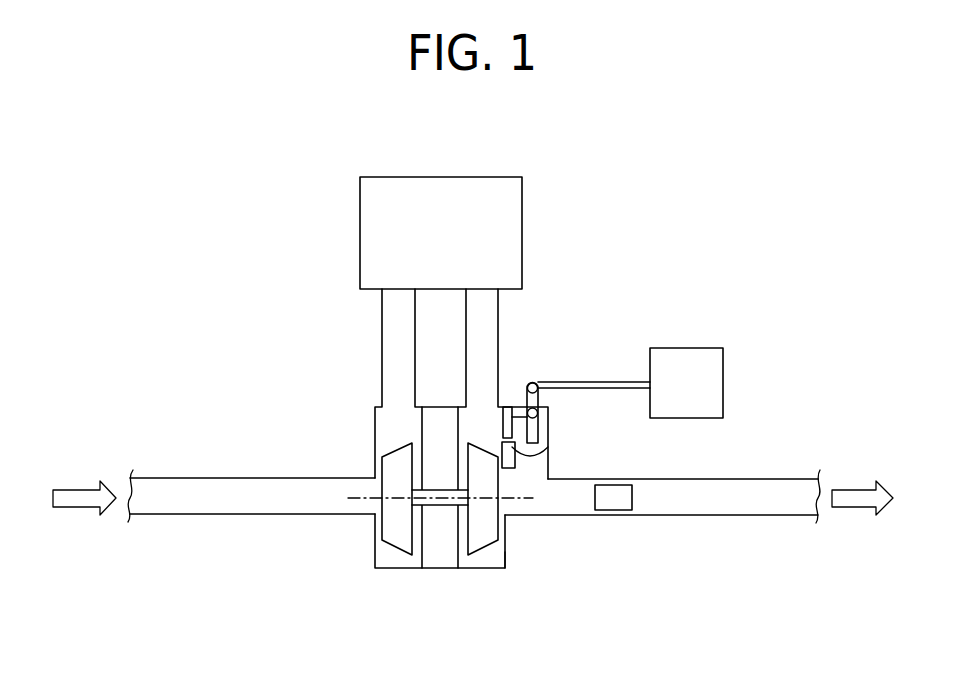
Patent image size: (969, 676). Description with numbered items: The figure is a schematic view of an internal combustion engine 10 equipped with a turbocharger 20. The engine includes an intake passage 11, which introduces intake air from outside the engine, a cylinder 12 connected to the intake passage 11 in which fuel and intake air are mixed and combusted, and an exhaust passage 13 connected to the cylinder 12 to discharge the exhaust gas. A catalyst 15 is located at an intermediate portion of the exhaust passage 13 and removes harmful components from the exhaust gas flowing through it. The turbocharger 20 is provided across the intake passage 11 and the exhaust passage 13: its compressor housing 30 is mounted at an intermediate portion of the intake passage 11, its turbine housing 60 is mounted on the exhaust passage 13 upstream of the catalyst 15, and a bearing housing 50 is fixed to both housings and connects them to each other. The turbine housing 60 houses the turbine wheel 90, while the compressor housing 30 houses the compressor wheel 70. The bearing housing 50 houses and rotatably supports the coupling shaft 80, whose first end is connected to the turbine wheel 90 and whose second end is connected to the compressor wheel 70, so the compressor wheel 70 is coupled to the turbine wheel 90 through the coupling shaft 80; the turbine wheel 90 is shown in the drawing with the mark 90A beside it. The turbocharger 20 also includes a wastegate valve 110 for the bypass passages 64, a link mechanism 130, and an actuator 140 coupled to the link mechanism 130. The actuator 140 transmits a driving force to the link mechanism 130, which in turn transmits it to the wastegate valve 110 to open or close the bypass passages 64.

The internal combustion engine 10 is at (245, 197).
The intake passage 11 is at (382, 318).
The cylinder 12 is at (467, 177).
The exhaust passage 13 is at (498, 306).
The catalyst 15 is at (615, 510).
The turbocharger 20 is at (346, 551).
The compressor housing 30 is at (380, 568).
The bearing housing 50 is at (432, 568).
The turbine housing 60 is at (488, 568).
The bypass passages 64 is at (500, 428).
The compressor wheel 70 is at (398, 550).
The coupling shaft 80 is at (440, 505).
The turbine wheel 90 is at (505, 568).
The blade 90A is at (533, 500).
The wastegate valve 110 is at (548, 453).
The link mechanism 130 is at (595, 382).
The actuator 140 is at (678, 348).